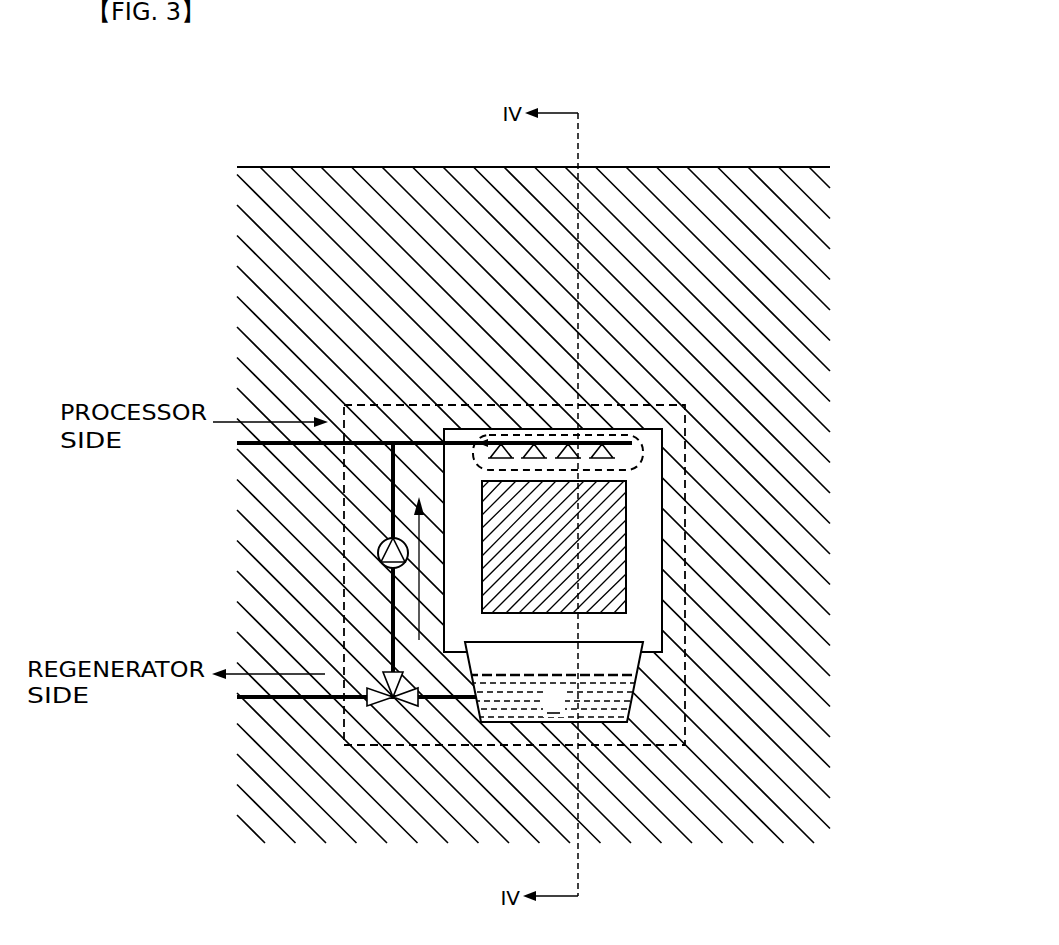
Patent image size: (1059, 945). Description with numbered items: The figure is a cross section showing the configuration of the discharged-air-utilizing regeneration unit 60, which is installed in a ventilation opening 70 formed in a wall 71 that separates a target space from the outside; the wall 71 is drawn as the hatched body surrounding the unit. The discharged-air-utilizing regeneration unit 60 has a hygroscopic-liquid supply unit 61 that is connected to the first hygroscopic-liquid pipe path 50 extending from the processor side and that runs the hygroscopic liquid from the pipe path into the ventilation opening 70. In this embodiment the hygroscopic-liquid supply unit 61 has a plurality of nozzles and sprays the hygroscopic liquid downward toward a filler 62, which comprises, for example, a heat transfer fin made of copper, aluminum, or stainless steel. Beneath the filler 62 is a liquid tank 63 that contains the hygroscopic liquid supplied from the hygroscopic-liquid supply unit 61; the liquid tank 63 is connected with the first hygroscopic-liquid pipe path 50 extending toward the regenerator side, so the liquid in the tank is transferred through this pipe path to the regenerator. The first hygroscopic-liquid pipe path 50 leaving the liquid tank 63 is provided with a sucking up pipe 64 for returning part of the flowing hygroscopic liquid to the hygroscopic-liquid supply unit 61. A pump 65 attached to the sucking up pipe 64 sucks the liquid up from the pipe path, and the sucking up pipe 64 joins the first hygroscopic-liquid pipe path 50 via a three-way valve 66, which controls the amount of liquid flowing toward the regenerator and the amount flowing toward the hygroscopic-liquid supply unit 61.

The first hygroscopic-liquid pipe path 50 is at (307, 445).
The discharged-air-utilizing regeneration unit 60 is at (663, 428).
The hygroscopic-liquid supply unit 61 is at (645, 450).
The filler 62 is at (626, 580).
The liquid tank 63 is at (638, 667).
The sucking up pipe 64 is at (393, 640).
The pump 65 is at (379, 548).
The three-way valve 66 is at (402, 702).
The ventilation opening 70 is at (662, 500).
The wall 71 is at (802, 333).